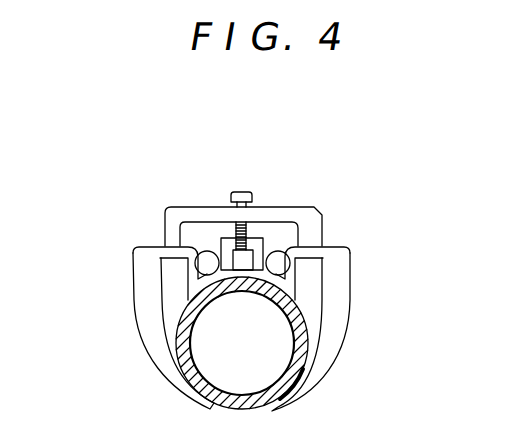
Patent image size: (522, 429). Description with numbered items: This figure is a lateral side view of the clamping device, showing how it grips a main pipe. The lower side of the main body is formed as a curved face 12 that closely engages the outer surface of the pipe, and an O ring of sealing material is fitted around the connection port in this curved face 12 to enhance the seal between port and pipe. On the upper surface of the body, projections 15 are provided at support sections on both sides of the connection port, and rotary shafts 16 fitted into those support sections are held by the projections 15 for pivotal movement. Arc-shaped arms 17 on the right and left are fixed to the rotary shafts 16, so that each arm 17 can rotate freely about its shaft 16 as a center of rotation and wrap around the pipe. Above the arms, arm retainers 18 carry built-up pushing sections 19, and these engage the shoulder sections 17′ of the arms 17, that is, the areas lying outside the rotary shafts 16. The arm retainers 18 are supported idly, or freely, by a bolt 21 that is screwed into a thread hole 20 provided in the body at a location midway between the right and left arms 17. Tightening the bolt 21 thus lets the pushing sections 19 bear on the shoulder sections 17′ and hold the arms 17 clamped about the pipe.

The curved face 12 is at (232, 279).
The projections 15 is at (188, 268).
The rotary shafts 16 is at (160, 248).
The arc-shaped arms 17 is at (150, 310).
The shoulder sections 17′ is at (160, 246).
The arm retainers 18 is at (312, 218).
The pushing sections 19 is at (170, 242).
The thread holes 20 is at (250, 247).
The bolts 21 is at (240, 191).